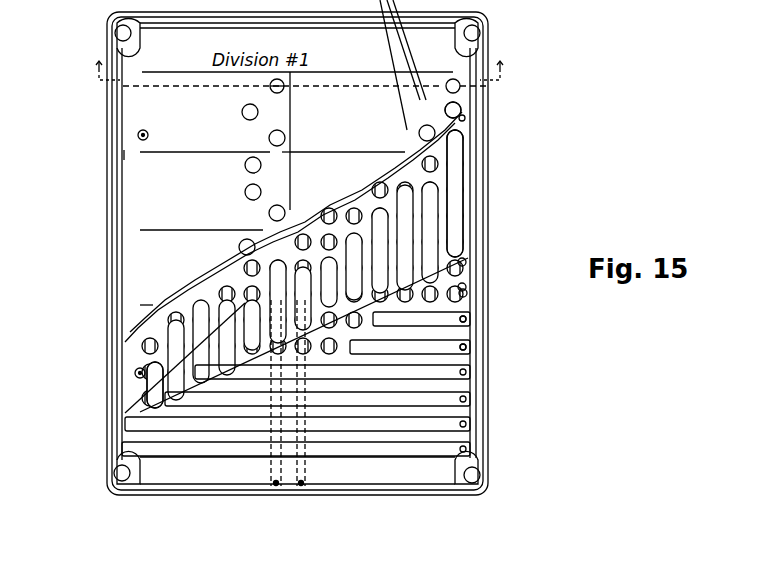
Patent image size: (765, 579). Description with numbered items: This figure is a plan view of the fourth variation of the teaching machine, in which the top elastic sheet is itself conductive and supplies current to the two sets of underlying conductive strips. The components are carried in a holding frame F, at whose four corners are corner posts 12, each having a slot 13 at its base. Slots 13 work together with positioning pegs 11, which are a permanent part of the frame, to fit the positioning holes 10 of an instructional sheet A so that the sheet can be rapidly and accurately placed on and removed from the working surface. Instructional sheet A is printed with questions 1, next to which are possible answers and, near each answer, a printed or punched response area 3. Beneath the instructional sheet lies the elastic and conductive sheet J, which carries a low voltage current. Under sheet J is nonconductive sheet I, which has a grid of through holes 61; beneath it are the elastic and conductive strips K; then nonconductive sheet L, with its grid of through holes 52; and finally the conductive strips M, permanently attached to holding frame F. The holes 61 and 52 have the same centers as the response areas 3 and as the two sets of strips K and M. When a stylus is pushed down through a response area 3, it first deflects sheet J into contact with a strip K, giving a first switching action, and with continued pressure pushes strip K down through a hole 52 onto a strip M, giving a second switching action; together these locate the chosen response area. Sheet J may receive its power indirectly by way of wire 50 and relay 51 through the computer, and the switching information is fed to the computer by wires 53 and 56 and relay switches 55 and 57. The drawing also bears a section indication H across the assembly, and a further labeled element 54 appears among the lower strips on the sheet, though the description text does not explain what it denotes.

The question 1 is at (155, 108).
The response area 3 is at (462, 86).
The positioning hole 10 is at (150, 123).
The positioning peg 11 is at (137, 133).
The corner post 12 is at (115, 476).
The slot 13 is at (140, 478).
The wire 50 is at (508, 126).
The relay 51 is at (463, 118).
The through holes 52 is at (466, 287).
The wire 53 is at (498, 342).
The lower slide bars 54 is at (468, 424).
The relay switch 55 is at (468, 320).
The wire 56 is at (278, 488).
The relay switch 57 is at (301, 490).
The through holes 61 is at (145, 357).
The instructional sheet A is at (145, 223).
The holding frame F is at (173, 472).
The section line H-H' H is at (303, 60).
The nonconductive sheet I is at (140, 386).
The elastic and conductive sheet J is at (133, 334).
The elastic and conductive strips K is at (432, 243).
The nonconductive sheet L is at (462, 173).
The conductive strips M is at (468, 372).